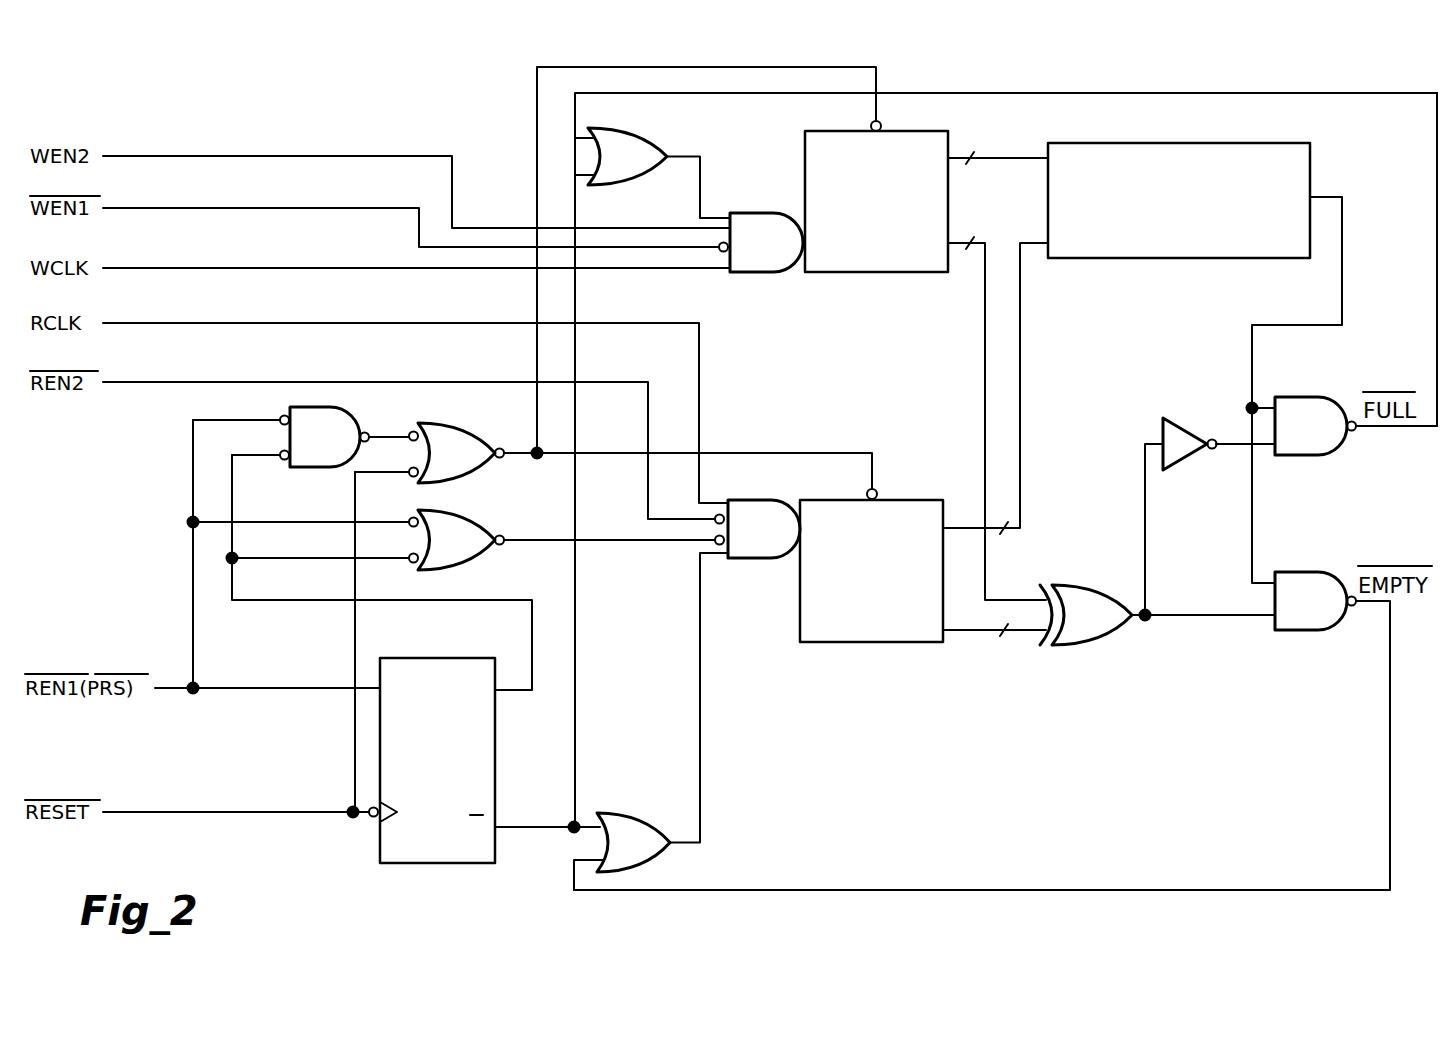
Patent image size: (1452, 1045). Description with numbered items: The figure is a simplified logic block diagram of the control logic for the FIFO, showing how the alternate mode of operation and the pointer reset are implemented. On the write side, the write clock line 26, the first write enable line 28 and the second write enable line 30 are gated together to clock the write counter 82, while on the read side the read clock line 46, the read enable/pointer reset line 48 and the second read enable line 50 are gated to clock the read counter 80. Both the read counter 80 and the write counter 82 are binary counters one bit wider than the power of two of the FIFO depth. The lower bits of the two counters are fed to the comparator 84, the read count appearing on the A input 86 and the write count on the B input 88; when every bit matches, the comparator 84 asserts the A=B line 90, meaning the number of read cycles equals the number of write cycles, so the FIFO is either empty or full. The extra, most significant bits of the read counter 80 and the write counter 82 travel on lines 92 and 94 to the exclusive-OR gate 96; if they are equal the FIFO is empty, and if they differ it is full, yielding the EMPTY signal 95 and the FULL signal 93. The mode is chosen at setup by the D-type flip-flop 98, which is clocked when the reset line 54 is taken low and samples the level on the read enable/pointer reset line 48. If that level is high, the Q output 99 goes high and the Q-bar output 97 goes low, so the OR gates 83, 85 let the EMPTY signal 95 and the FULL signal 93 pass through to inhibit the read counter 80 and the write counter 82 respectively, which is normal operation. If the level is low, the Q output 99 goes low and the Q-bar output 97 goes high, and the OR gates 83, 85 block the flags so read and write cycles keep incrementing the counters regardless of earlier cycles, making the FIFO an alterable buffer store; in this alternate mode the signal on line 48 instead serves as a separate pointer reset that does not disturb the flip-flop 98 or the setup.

The write clock line 26 is at (306, 268).
The write enable 1 line 28 is at (265, 208).
The write enable 2 line 30 is at (218, 156).
The read clock line 46 is at (386, 323).
The read enable 1/pointer reset line 48 is at (176, 686).
The read enable 2 line 50 is at (222, 382).
The reset line 54 is at (206, 810).
The read counter 80 is at (870, 643).
The write counter 82 is at (890, 273).
The OR gate 83 is at (640, 815).
The comparator 84 is at (1153, 259).
The OR gate 85 is at (663, 142).
The A input 86 is at (1020, 330).
The B input 88 is at (1030, 157).
The A=B line 90 is at (1342, 277).
The read counter most significant bit line 92 is at (1022, 630).
The FULL signal 93 is at (1437, 195).
The write counter most significant bit line 94 is at (980, 396).
The EMPTY signal 95 is at (1105, 890).
The exclusive-OR gate 96 is at (1110, 640).
The Q-bar output 97 is at (545, 825).
The D-type flip-flop 98 is at (388, 864).
The Q output 99 is at (533, 610).